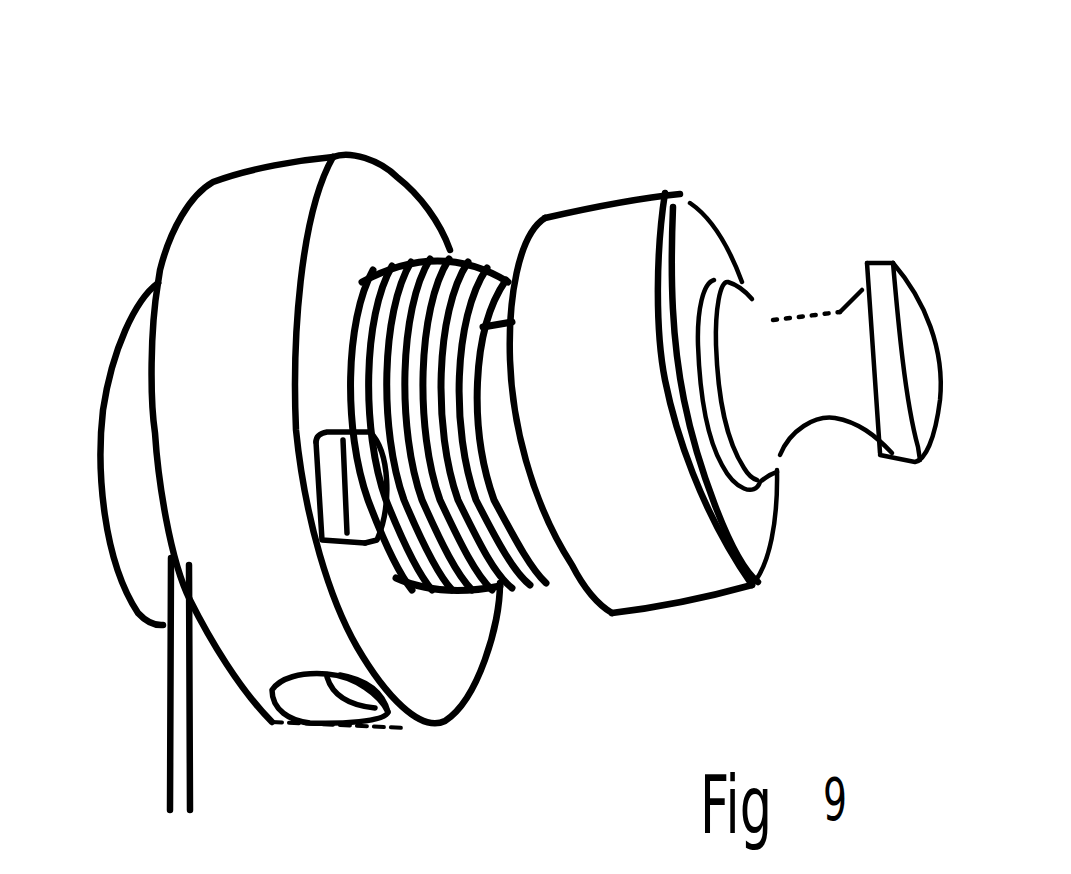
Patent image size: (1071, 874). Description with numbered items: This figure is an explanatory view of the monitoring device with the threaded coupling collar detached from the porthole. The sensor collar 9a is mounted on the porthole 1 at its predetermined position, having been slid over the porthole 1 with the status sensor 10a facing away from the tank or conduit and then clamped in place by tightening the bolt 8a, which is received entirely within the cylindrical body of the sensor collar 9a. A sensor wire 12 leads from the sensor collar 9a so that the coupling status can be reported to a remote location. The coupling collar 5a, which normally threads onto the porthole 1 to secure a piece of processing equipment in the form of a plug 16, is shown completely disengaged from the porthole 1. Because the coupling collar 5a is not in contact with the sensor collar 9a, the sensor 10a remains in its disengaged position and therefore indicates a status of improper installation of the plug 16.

The porthole 1 is at (130, 553).
The coupling collar 5a is at (603, 250).
The bolt 8a is at (362, 703).
The sensor collar 9a is at (257, 207).
The status sensor 10a is at (378, 513).
The sensor wire 12 is at (167, 747).
The plug 16 is at (504, 393).